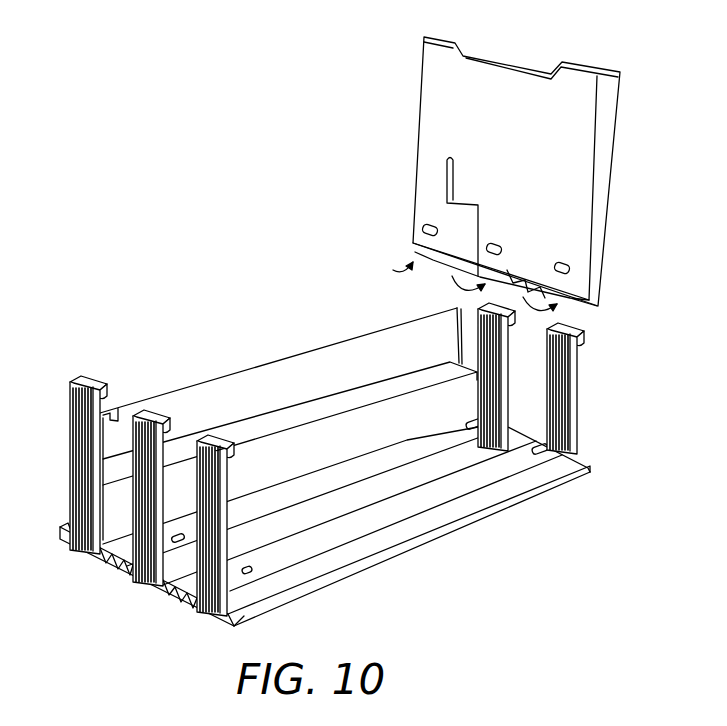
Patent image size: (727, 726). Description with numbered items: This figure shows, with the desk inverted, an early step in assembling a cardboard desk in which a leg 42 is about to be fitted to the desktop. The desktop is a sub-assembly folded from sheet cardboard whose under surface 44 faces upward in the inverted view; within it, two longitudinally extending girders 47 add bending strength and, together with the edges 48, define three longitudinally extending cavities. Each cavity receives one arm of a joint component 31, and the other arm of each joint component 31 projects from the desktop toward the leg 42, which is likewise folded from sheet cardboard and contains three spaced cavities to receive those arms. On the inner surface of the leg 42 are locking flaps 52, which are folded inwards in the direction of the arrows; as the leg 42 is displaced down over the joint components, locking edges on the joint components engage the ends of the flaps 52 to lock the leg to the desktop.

The joint component 31 is at (70, 447).
The leg 42 is at (417, 132).
The under surface 44 is at (423, 503).
The longitudinally extending girder 47 is at (107, 563).
The edge 48 is at (62, 526).
The locking flap 52 is at (413, 249).